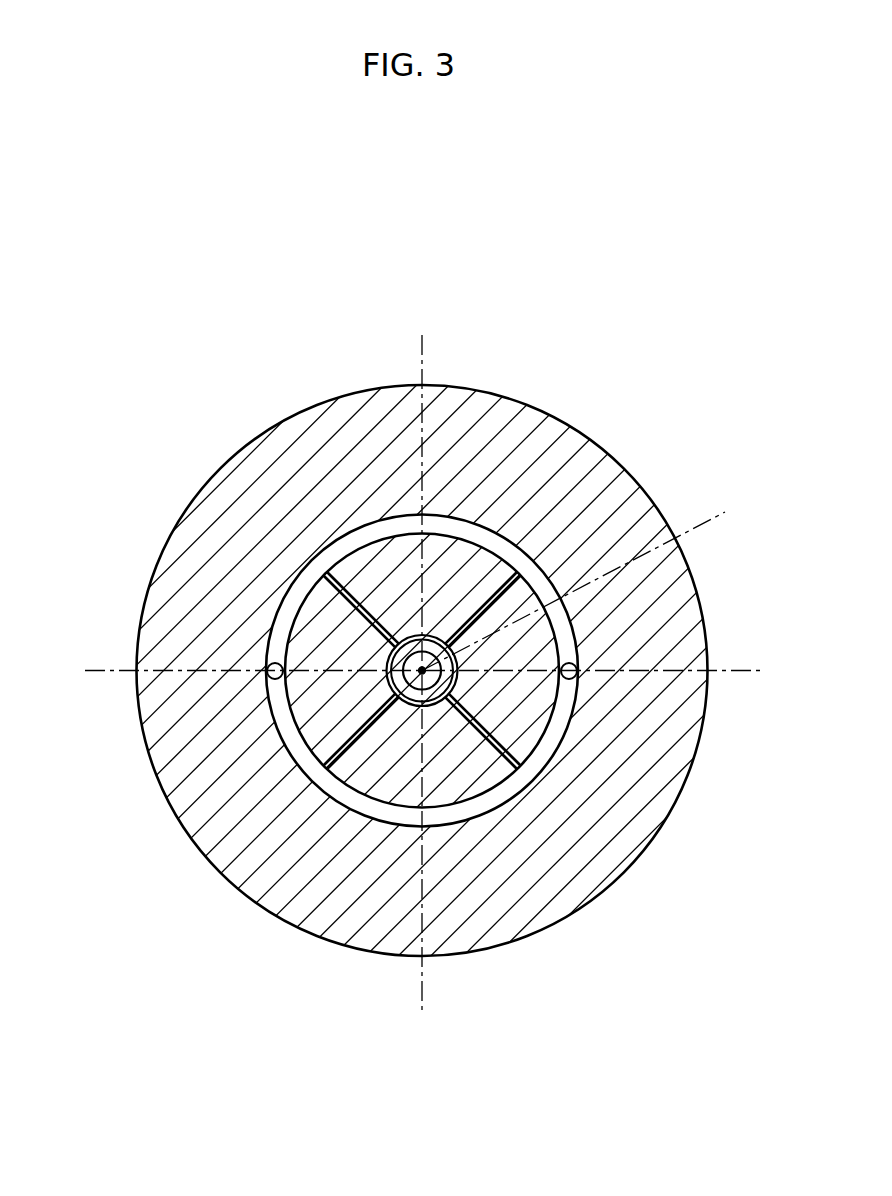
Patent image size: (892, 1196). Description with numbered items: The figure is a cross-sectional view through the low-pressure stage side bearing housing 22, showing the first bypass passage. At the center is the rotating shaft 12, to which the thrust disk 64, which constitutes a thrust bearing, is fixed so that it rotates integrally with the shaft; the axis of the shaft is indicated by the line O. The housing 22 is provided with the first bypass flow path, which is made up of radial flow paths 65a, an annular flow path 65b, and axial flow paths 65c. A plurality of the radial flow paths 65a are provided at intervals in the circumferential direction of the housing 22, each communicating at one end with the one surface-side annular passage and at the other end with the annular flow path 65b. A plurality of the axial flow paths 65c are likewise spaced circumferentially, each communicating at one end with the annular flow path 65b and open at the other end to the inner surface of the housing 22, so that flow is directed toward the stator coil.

The low-pressure stage side bearing housing 22 is at (338, 388).
The rotating shaft 12 is at (507, 578).
The thrust disk 64 is at (522, 764).
The radial flow path 65a is at (322, 578).
The annular flow path 65b is at (433, 648).
The axial flow path 65c is at (575, 669).
The optical axis O is at (582, 582).